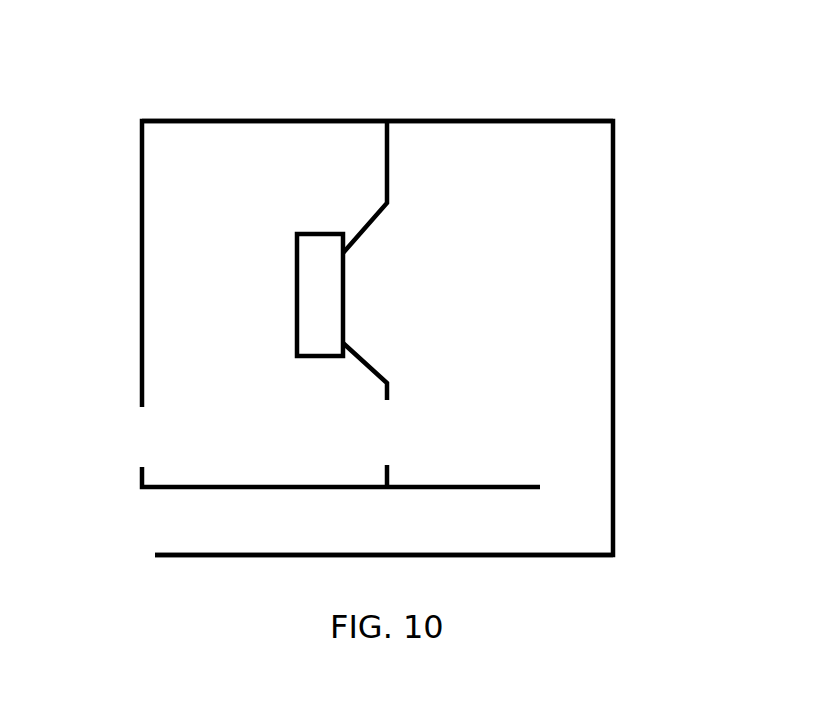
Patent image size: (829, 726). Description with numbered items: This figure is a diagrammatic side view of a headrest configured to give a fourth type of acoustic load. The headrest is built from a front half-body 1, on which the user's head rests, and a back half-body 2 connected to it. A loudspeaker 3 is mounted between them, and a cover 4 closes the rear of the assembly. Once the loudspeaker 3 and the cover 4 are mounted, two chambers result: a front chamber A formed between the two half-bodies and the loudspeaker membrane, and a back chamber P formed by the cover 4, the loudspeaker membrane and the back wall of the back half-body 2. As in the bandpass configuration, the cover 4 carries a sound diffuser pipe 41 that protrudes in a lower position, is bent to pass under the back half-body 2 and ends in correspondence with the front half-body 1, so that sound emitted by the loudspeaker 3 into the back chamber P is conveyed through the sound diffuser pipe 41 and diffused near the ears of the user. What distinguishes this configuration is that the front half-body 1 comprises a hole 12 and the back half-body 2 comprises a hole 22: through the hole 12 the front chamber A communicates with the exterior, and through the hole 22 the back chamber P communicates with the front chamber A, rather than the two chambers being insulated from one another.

The front half-body 1 is at (132, 240).
The back half-body 2 is at (388, 157).
The loudspeaker 3 is at (367, 287).
The cover 4 is at (572, 108).
The sound diffuser pipe 41 is at (404, 559).
The hole 12 is at (176, 432).
The hole 22 is at (377, 428).
The front chamber A is at (235, 165).
The back chamber P is at (574, 199).